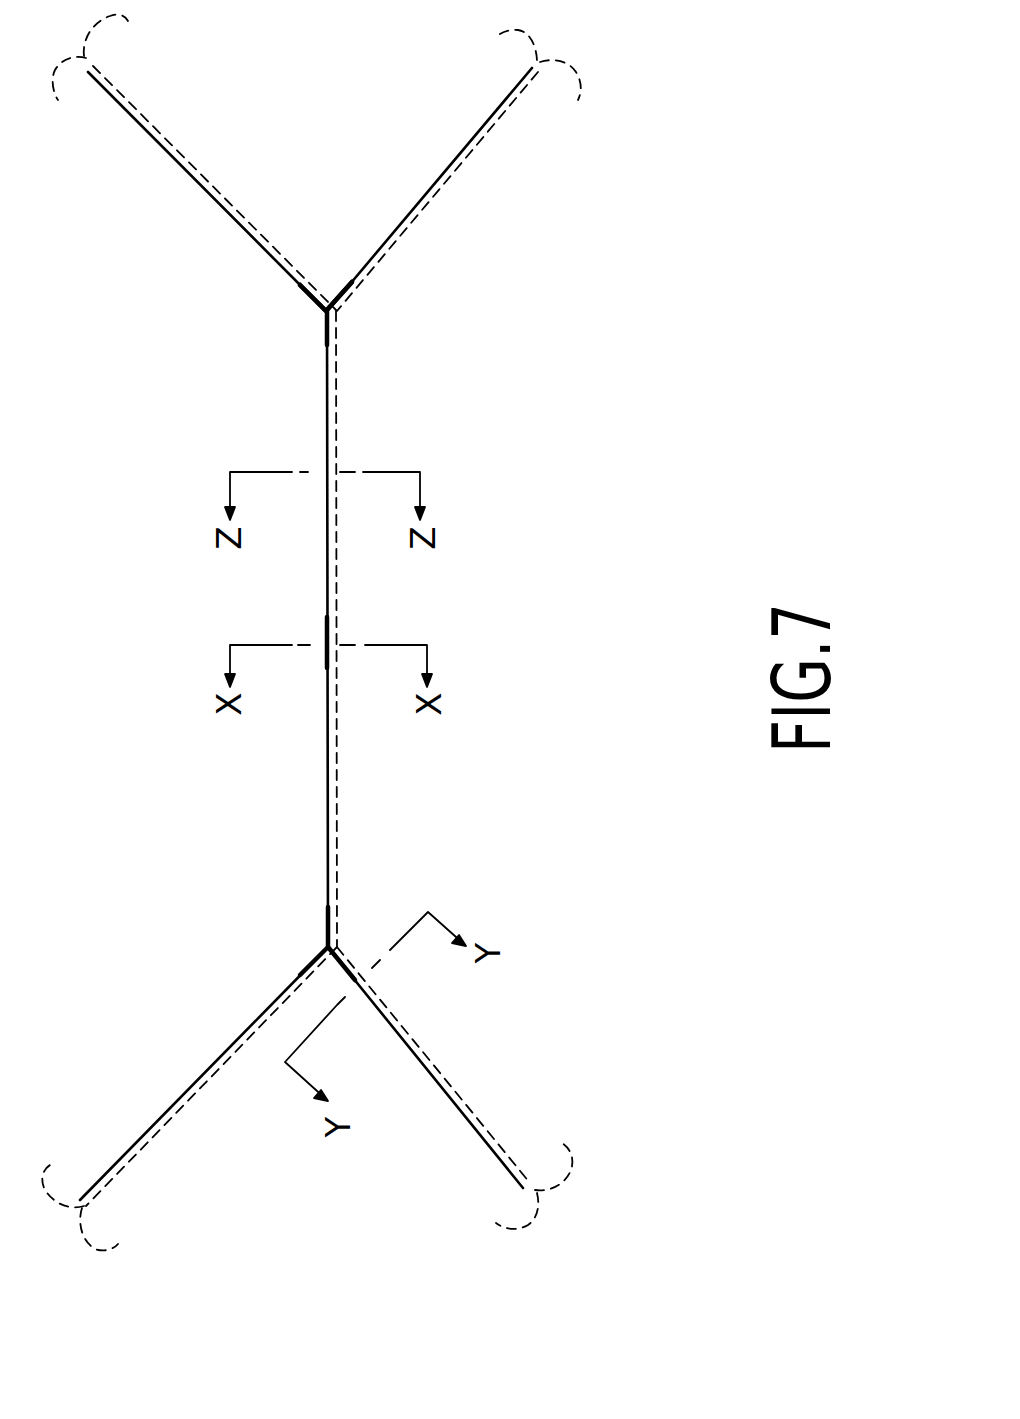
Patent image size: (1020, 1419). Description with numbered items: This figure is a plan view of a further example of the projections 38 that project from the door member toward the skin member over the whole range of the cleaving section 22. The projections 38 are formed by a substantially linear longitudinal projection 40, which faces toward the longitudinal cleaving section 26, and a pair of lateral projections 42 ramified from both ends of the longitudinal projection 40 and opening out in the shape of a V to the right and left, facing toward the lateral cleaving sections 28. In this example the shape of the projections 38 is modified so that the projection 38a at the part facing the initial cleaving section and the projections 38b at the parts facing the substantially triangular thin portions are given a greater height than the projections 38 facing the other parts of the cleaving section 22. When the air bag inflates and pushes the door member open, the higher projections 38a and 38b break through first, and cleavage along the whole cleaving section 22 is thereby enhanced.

The cleaving section 22 is at (338, 818).
The longitudinal cleaving section 26 is at (338, 567).
The lateral cleaving sections 28 is at (217, 193).
The projections 38 is at (100, 275).
The projection 38a is at (323, 637).
The projection 38b is at (352, 282).
The longitudinal projection 40 is at (325, 400).
The lateral projections 42 is at (257, 245).